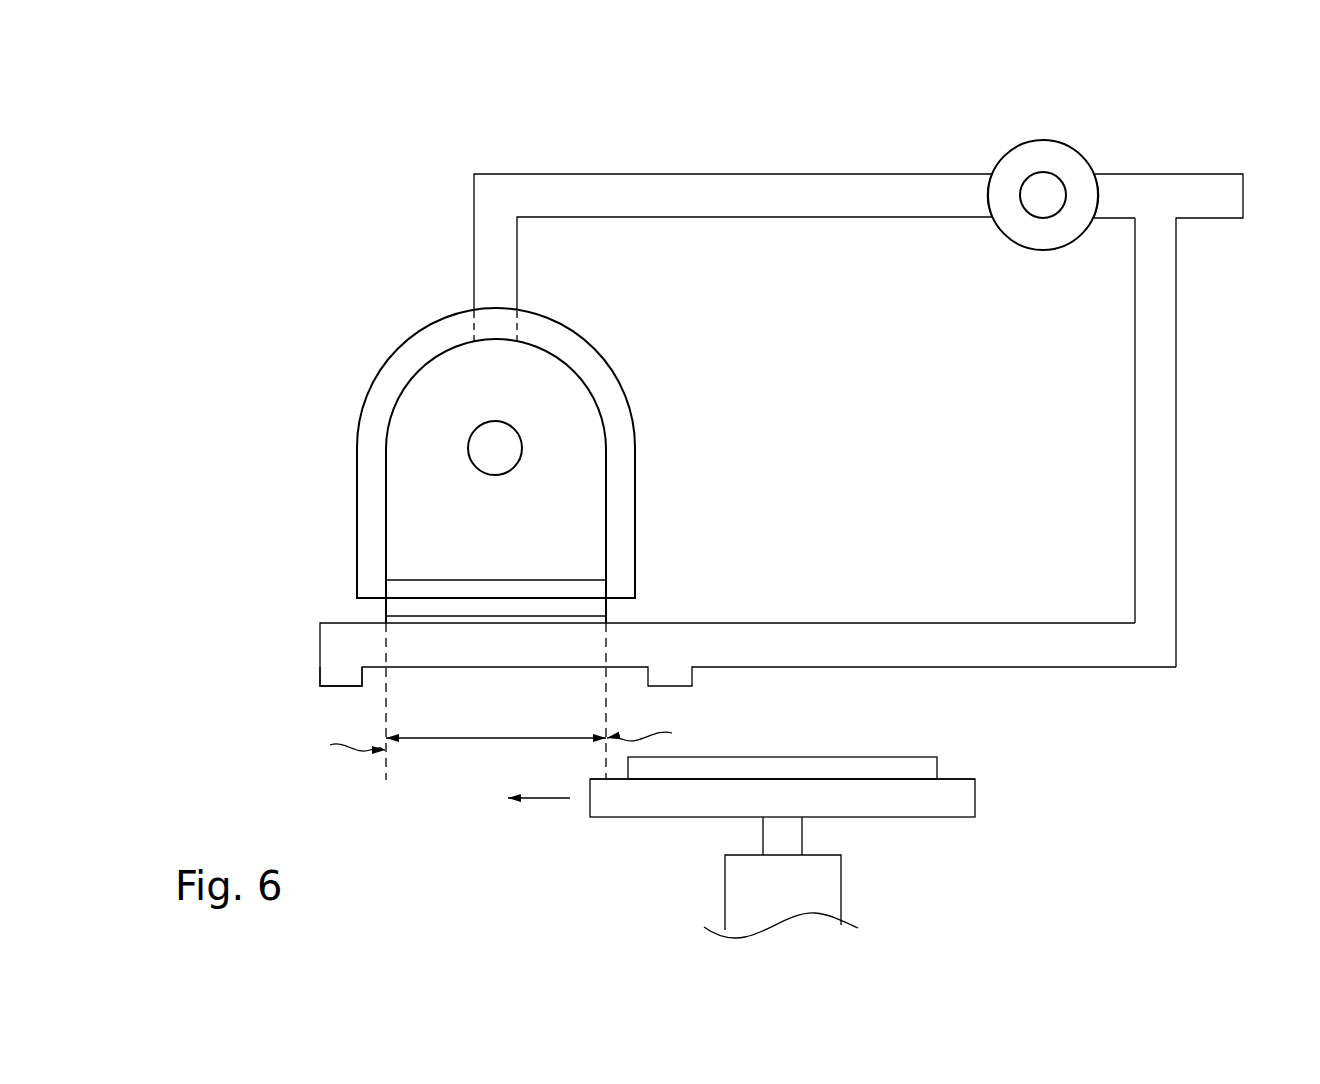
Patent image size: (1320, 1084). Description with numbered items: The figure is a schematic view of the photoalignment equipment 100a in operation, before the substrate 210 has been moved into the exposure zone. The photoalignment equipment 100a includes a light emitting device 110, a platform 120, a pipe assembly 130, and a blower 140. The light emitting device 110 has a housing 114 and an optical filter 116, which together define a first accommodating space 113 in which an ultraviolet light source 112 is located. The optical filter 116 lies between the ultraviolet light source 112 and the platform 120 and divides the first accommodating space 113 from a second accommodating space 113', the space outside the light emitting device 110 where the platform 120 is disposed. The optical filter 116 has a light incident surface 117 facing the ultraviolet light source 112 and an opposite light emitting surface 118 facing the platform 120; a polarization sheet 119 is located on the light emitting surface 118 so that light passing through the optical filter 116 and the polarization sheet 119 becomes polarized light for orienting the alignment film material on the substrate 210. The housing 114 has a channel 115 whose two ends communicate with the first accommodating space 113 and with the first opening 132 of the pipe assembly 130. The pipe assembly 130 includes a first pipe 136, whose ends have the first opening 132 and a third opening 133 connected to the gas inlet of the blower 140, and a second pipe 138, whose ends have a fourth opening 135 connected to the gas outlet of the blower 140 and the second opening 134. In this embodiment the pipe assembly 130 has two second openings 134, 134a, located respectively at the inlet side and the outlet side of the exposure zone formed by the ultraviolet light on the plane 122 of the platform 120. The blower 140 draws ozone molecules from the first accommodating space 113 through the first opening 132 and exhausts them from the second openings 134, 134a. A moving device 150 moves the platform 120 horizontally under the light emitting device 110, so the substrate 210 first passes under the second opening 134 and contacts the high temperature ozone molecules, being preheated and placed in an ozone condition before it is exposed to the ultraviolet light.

The photoalignment equipment 100a is at (310, 113).
The light emitting device 110 is at (232, 368).
The ultraviolet light source 112 is at (468, 448).
The first accommodating space 113 is at (477, 362).
The second accommodating space 113' is at (705, 577).
The housing 114 is at (389, 385).
The channel 115 is at (519, 326).
The optical filter 116 is at (441, 592).
The light incident surface 117 is at (546, 578).
The light emitting surface 118 is at (420, 599).
The polarization sheet 119 is at (563, 607).
The platform 120 is at (963, 800).
The plane 122 is at (963, 778).
The pipe assembly 130 is at (910, 345).
The first opening 132 is at (500, 306).
The third opening 133 is at (988, 190).
The second opening 134 is at (673, 687).
The second opening 134a is at (339, 688).
The fourth opening 135 is at (1100, 197).
The first pipe 136 is at (935, 207).
The second pipe 138 is at (1153, 438).
The blower 140 is at (1043, 140).
The moving device 150 is at (827, 888).
The substrate 210 is at (805, 765).